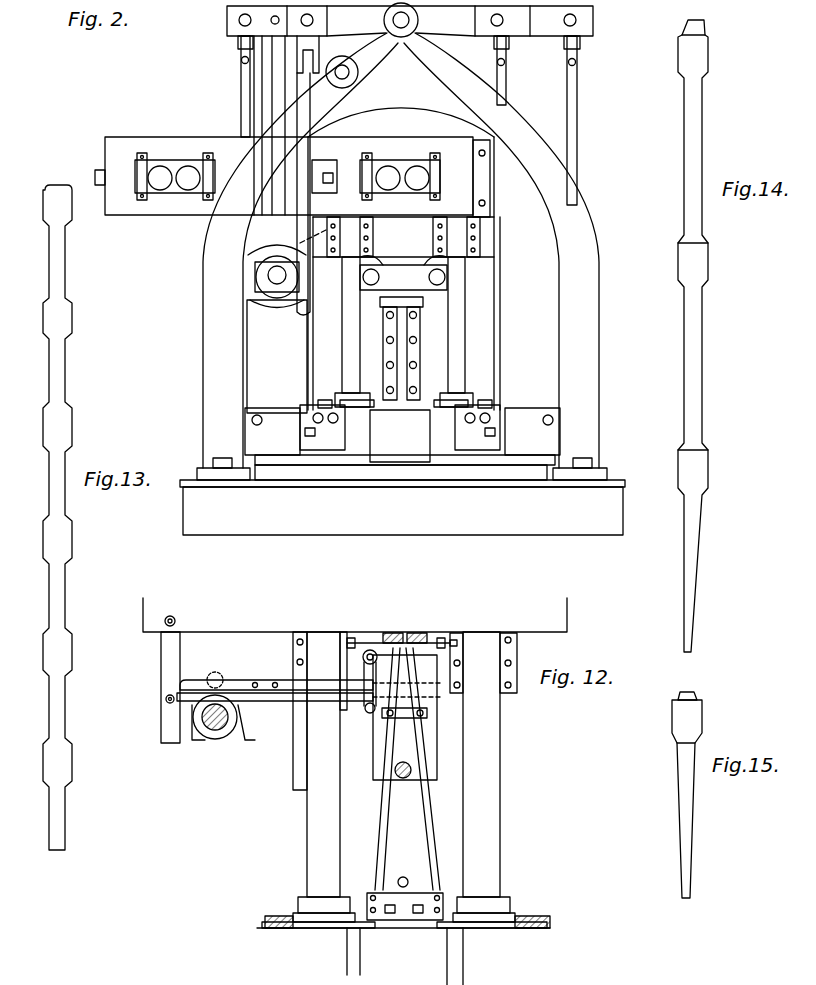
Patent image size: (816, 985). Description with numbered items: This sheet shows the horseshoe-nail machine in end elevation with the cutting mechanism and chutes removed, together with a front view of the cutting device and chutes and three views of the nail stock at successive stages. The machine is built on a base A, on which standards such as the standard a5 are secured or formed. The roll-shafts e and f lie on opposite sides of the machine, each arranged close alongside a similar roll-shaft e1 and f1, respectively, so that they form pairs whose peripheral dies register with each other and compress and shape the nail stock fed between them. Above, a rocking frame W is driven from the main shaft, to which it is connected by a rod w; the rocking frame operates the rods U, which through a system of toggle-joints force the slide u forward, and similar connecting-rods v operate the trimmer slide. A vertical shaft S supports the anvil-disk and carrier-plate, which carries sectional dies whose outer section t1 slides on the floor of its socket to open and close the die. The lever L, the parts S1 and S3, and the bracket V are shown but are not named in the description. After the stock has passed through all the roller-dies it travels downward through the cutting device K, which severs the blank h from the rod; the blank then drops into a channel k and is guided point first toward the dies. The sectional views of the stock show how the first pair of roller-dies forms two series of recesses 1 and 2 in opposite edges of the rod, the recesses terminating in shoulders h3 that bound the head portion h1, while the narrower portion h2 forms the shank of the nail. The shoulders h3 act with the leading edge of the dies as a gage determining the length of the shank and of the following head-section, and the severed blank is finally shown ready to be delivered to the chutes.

In FIG. 2, the rocking frame W is at (395, 20).
In FIG. 2, the rods U is at (241, 79).
In FIG. 2, the rod w is at (268, 91).
In FIG. 2, the connecting-rods v is at (290, 340).
In FIG. 2, the standard a5 is at (588, 297).
In FIG. 2, the roll-shaft e1 is at (160, 165).
In FIG. 2, the roll-shaft e is at (188, 168).
In FIG. 2, the roll-shaft f is at (400, 157).
In FIG. 2, the roll-shaft f1 is at (417, 172).
In FIG. 2, the lever L is at (268, 276).
In FIG. 12, the lever L is at (215, 738).
In FIG. 2, the vertical shaft S is at (346, 336).
In FIG. 12, the vertical shaft S is at (307, 798).
In FIG. 2, the standard foot S1 is at (323, 405).
In FIG. 12, the standard foot S1 is at (550, 912).
In FIG. 2, the standard collar S3 is at (375, 392).
In FIG. 2, the outer die section t1 is at (388, 418).
In FIG. 12, the outer die section t1 is at (292, 928).
In FIG. 2, the bracket V is at (400, 427).
In FIG. 2, the slide u is at (262, 415).
In FIG. 2, the base A is at (402, 500).
In FIG. 12, the cutting device K is at (363, 694).
In FIG. 12, the channel k is at (385, 744).
In FIG. 13, the blank h is at (70, 517).
In FIG. 14, the blank h is at (708, 336).
In FIG. 13, the head portion h1 is at (45, 431).
In FIG. 14, the head portion h1 is at (700, 56).
In FIG. 15, the head portion h1 is at (693, 714).
In FIG. 13, the narrower portion h2 is at (49, 481).
In FIG. 14, the narrower portion h2 is at (721, 551).
In FIG. 15, the narrower portion h2 is at (688, 814).
In FIG. 13, the shoulders h3 is at (70, 406).
In FIG. 14, the shoulders h3 is at (672, 505).
In FIG. 13, the recesses 1 is at (49, 252).
In FIG. 13, the recesses 2 is at (49, 370).